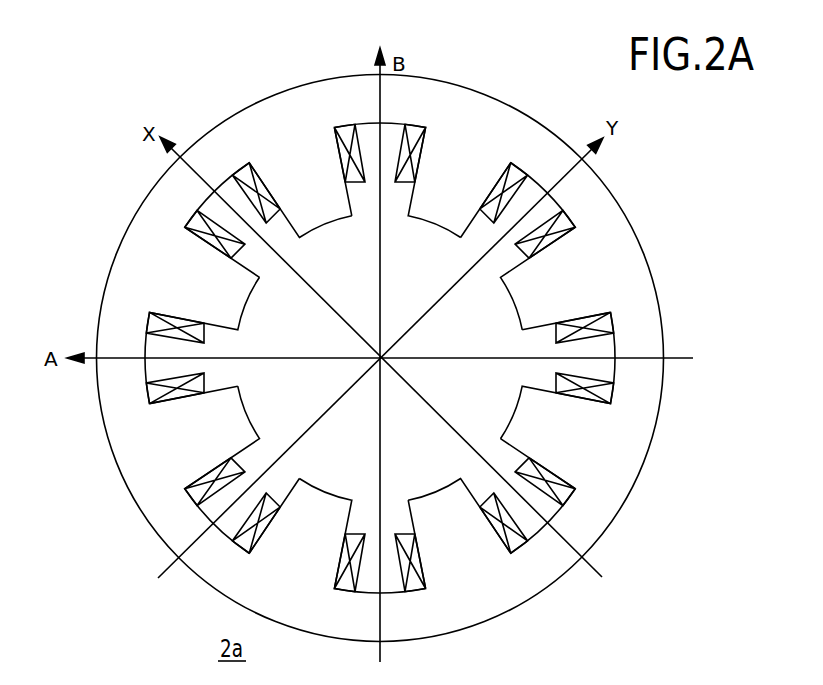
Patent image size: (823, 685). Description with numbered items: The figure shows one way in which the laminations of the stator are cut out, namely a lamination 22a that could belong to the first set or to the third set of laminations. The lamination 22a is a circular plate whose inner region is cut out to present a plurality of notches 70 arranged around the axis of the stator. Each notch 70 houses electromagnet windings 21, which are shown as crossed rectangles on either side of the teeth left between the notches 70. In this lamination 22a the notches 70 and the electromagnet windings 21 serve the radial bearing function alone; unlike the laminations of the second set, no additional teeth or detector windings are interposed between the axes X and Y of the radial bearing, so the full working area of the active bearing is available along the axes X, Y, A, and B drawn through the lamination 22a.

The electromagnet windings 21 is at (346, 168).
The lamination 22a is at (138, 268).
The notches 70 is at (350, 199).